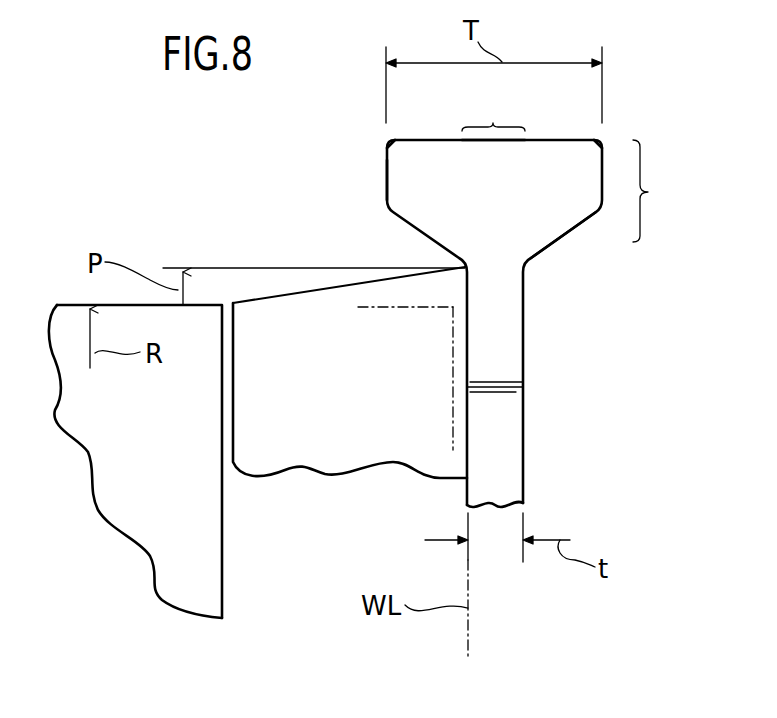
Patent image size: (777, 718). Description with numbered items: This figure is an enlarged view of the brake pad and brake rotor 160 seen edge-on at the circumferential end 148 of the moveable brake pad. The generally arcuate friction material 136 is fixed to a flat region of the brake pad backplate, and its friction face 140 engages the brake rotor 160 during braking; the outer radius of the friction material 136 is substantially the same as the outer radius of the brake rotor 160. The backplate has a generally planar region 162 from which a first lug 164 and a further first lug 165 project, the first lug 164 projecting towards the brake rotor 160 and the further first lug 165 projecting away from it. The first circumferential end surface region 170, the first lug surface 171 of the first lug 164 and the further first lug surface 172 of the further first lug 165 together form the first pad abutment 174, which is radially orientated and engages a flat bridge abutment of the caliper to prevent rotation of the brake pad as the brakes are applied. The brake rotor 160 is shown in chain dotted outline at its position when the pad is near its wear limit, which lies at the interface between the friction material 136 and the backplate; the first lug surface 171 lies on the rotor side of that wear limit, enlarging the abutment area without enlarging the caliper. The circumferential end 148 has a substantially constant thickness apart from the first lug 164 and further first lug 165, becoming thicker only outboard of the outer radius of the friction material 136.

The friction material 136 is at (297, 345).
The friction face 140 is at (230, 422).
The circumferential end 148 is at (505, 407).
The brake rotor 160 is at (195, 548).
The generally planar region 162 is at (505, 327).
The first lug 164 is at (396, 157).
The further first lug 165 is at (590, 157).
The first circumferential end surface region 170 is at (493, 116).
The first lug surface 171 is at (413, 195).
The further first lug surface 172 is at (567, 212).
The first pad abutment 174 is at (666, 191).